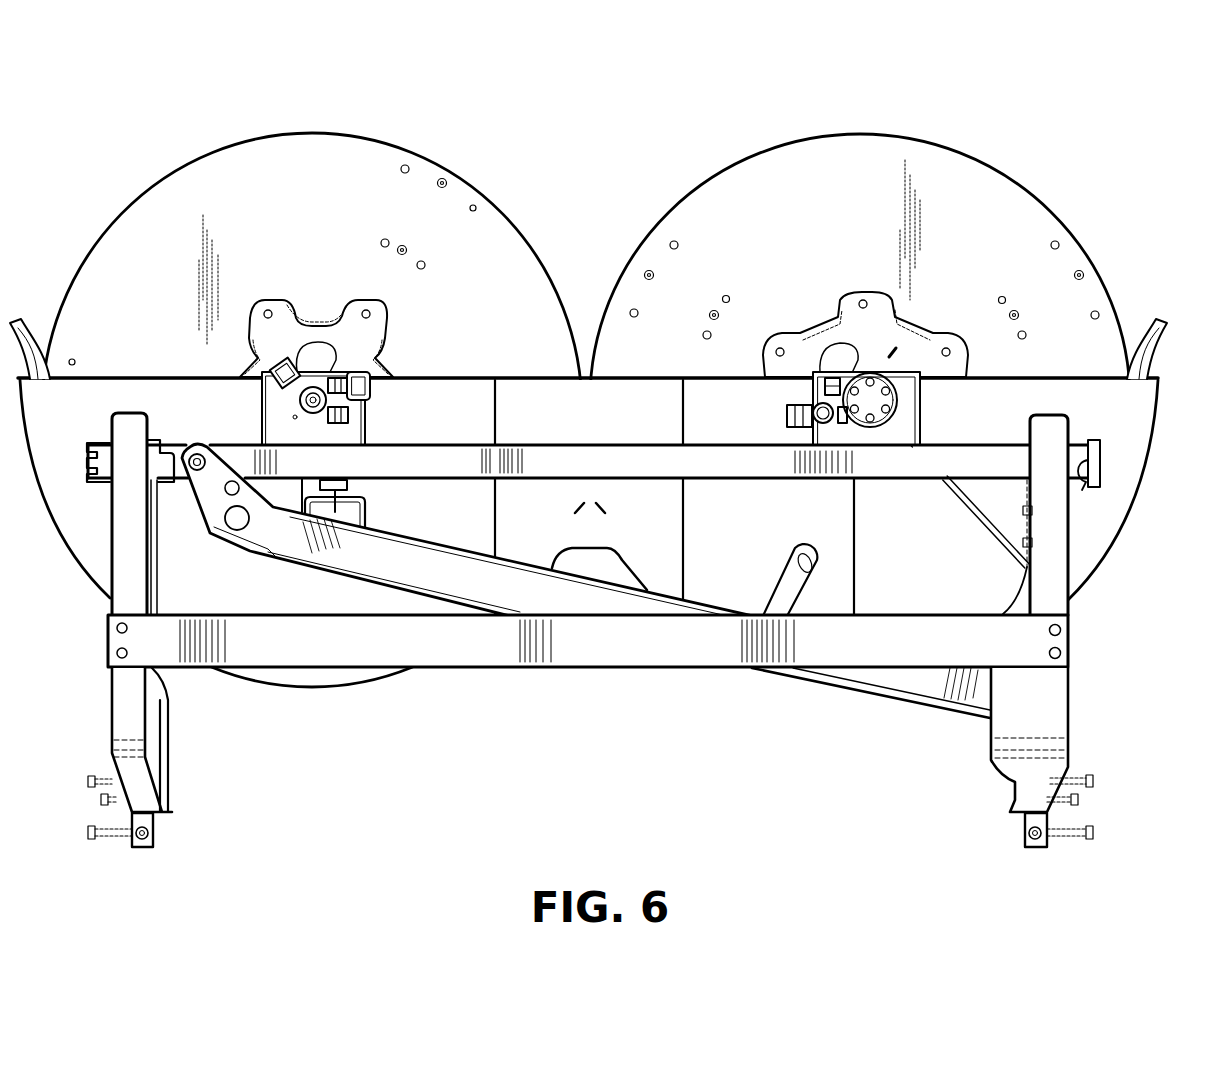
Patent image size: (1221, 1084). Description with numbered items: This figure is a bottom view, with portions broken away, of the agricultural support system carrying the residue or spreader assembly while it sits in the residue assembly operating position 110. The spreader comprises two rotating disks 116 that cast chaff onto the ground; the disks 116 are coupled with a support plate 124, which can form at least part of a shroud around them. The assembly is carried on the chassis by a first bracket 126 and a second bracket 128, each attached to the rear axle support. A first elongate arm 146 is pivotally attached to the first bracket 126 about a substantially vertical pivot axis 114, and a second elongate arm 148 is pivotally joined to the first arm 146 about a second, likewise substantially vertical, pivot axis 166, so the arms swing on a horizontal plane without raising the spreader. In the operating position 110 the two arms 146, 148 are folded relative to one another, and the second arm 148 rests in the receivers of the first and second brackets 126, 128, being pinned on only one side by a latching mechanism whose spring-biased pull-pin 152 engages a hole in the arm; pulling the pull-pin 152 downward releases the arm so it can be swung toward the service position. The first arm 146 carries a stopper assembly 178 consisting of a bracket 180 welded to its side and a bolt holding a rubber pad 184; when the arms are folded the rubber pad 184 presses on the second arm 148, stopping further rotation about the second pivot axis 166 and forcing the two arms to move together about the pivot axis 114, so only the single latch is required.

The residue assembly operating position 110 is at (587, 467).
The pivot axis 114 is at (1027, 716).
The rotating disks 116 is at (297, 160).
The support plate 124 is at (733, 401).
The first bracket 126 is at (1040, 747).
The second bracket 128 is at (142, 788).
The first elongate arm 146 is at (918, 687).
The second elongate arm 148 is at (988, 458).
The pull-pin 152 is at (1105, 460).
The second pivot axis 166 is at (197, 445).
The stopper assembly 178 is at (389, 492).
The bracket 180 is at (347, 510).
The rubber pad 184 is at (350, 484).